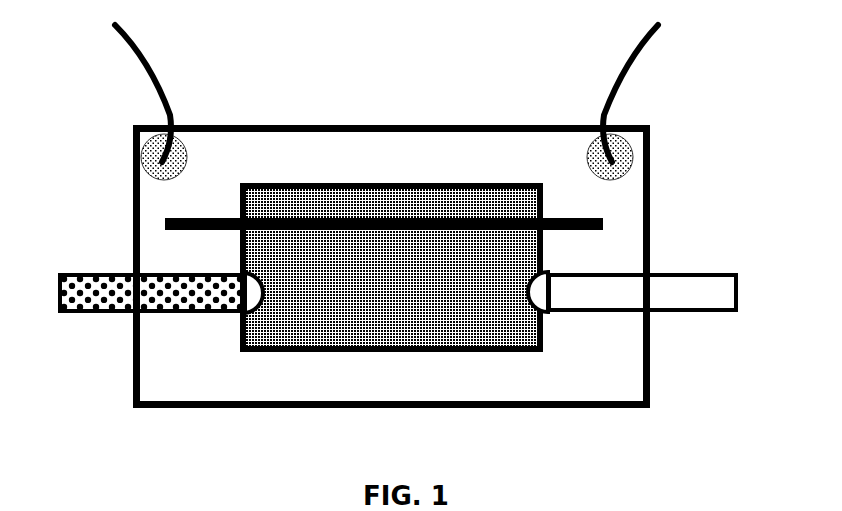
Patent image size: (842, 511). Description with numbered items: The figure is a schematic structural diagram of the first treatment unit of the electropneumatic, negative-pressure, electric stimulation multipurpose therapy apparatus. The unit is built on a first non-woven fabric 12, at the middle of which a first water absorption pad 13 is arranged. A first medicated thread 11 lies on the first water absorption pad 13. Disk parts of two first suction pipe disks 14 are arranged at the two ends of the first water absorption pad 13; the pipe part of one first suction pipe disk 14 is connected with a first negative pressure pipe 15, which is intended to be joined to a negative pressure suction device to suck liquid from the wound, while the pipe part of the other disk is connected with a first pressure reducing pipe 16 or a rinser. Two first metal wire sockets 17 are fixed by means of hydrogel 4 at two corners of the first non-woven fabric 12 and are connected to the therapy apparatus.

The hydrogel 4 is at (632, 173).
The first medicated thread 11 is at (190, 213).
The first non-woven fabric 12 is at (533, 383).
The first water absorption pad 13 is at (378, 327).
The first suction pipe disk 14 is at (540, 302).
The first negative pressure pipe 15 is at (687, 298).
The first pressure reducing pipe 16 is at (80, 313).
The first metal wire socket 17 is at (628, 78).